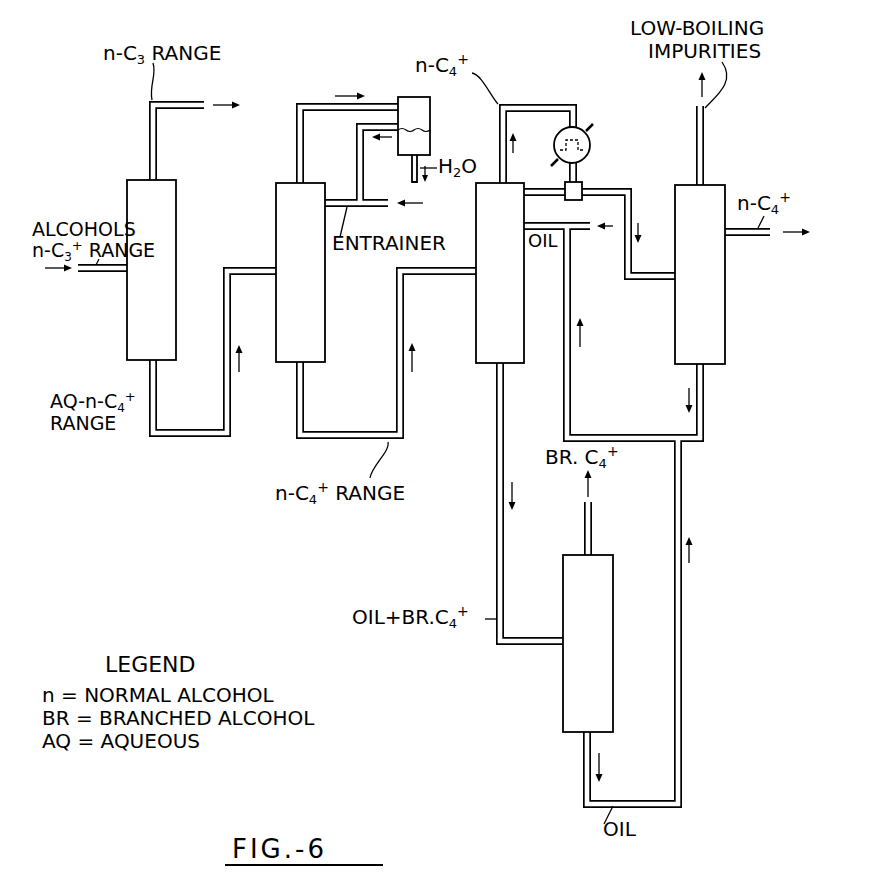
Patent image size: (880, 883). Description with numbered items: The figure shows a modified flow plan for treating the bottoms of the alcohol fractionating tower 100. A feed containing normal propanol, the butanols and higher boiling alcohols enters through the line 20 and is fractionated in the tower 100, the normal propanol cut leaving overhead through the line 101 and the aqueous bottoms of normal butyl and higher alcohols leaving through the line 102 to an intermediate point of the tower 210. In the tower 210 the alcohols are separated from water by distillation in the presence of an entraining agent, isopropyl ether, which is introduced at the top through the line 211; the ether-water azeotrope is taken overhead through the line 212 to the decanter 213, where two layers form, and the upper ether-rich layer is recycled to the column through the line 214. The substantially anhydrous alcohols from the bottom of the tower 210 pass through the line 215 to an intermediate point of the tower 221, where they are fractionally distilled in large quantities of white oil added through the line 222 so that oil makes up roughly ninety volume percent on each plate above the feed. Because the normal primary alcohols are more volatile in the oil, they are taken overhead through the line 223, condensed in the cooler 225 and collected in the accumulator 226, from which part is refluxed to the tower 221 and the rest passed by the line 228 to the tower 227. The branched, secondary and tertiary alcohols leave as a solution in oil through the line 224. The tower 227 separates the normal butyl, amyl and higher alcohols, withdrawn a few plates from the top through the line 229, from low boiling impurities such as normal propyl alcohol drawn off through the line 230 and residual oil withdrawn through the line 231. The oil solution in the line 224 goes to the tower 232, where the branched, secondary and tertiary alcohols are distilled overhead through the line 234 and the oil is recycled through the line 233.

The line 20 is at (109, 272).
The tower 100 is at (177, 231).
The line 101 is at (159, 101).
The line 102 is at (184, 440).
The tower 210 is at (312, 276).
The line 211 is at (372, 206).
The line 212 is at (319, 101).
The decanter 213 is at (430, 123).
The line 214 is at (357, 163).
The line 215 is at (367, 442).
The tower 221 is at (477, 319).
The line 222 is at (548, 233).
The line 223 is at (532, 95).
The line 224 is at (496, 566).
The cooler 225 is at (590, 147).
The accumulator 226 is at (582, 183).
The line 228 is at (661, 280).
The tower 227 is at (726, 335).
The line 229 is at (743, 237).
The line 230 is at (704, 144).
The line 231 is at (704, 423).
The tower 232 is at (563, 696).
The line 233 is at (679, 695).
The line 234 is at (592, 525).